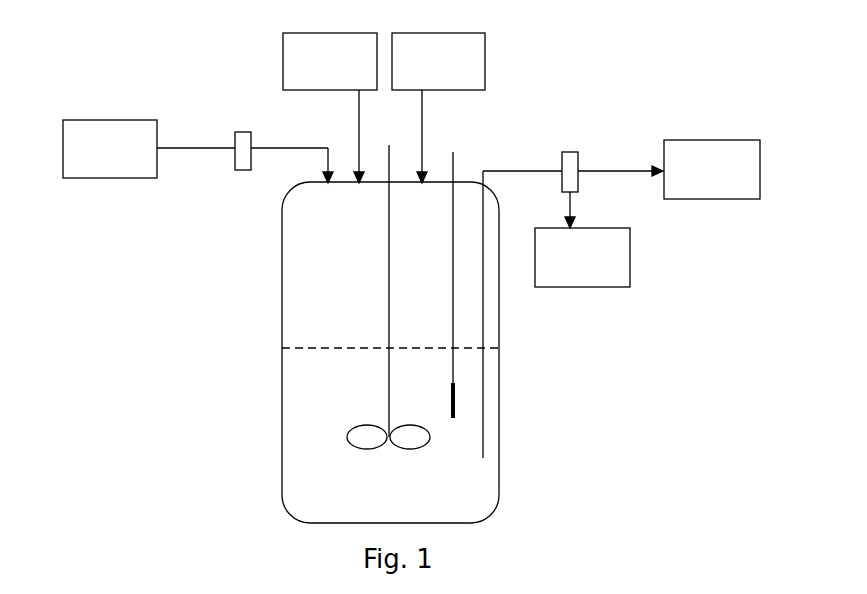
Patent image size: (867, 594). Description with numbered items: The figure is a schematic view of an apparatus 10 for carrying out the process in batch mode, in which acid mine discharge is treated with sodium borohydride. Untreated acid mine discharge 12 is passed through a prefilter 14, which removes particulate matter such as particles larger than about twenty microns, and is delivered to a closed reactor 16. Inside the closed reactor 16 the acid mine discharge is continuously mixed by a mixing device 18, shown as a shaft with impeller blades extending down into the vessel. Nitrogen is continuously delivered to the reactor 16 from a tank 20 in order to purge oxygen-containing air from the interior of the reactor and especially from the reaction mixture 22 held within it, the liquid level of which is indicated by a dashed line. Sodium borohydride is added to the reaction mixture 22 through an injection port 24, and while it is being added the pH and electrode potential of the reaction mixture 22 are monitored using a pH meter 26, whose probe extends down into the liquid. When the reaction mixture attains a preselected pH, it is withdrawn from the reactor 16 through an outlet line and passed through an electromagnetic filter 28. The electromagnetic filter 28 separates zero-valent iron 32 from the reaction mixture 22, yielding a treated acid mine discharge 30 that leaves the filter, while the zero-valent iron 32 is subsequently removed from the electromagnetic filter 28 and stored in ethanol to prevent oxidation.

The bioreactor system 10 is at (235, 82).
The untreated acid mine discharge 12 is at (97, 157).
The prefilter 14 is at (235, 172).
The closed reactor 16 is at (282, 373).
The mixing device 18 is at (418, 447).
The tank 20 is at (425, 66).
The reaction mixture 22 is at (328, 467).
The injection port 24 is at (317, 66).
The pH meter 26 is at (455, 170).
The electromagnetic filter 28 is at (572, 162).
The treated acid mine discharge 30 is at (699, 177).
The zero-valent iron 32 is at (569, 264).